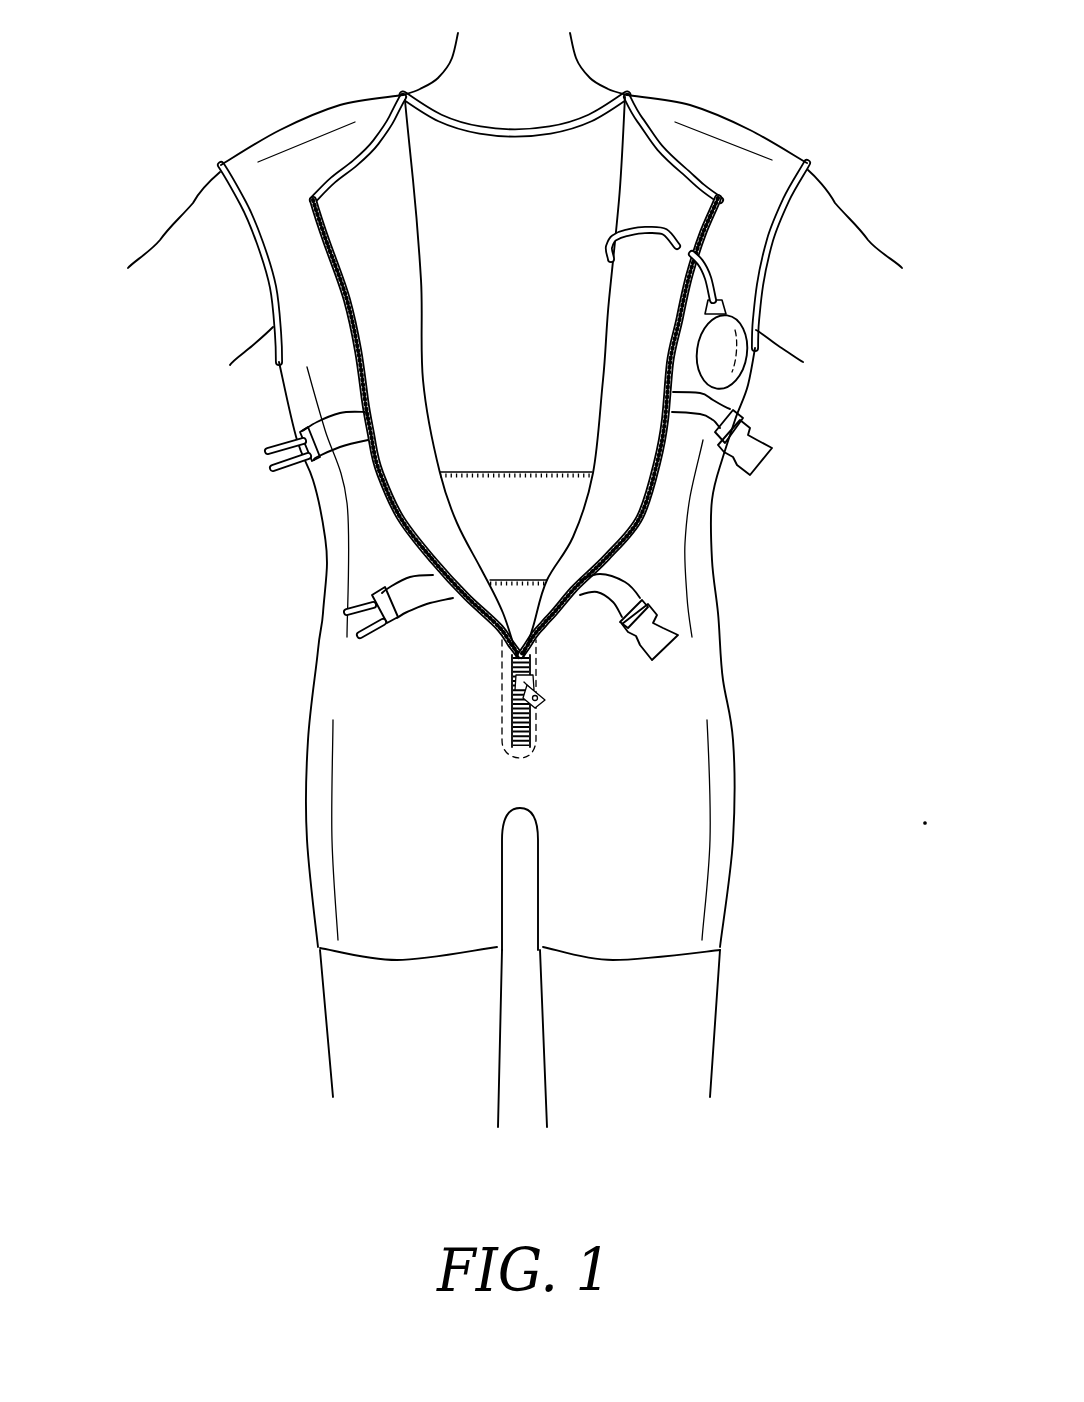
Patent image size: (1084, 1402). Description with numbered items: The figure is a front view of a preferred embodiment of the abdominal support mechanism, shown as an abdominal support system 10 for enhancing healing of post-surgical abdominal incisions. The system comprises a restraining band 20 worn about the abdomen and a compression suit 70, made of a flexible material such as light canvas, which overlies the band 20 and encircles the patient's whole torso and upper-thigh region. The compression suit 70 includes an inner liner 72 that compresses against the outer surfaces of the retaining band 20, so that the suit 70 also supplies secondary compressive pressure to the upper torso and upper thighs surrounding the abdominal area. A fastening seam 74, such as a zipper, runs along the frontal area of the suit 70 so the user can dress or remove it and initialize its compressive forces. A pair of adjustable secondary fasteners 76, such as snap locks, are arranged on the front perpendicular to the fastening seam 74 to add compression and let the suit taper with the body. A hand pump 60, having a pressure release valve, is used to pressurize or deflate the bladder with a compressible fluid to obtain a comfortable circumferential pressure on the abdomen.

The compression garment 10 is at (737, 125).
The restraining band 20 is at (560, 510).
The hand pump 60 is at (743, 355).
The compression suit 70 is at (730, 880).
The inner liner 72 is at (382, 365).
The fastening seam 74 is at (528, 720).
The adjustable secondary fasteners 76 is at (767, 460).